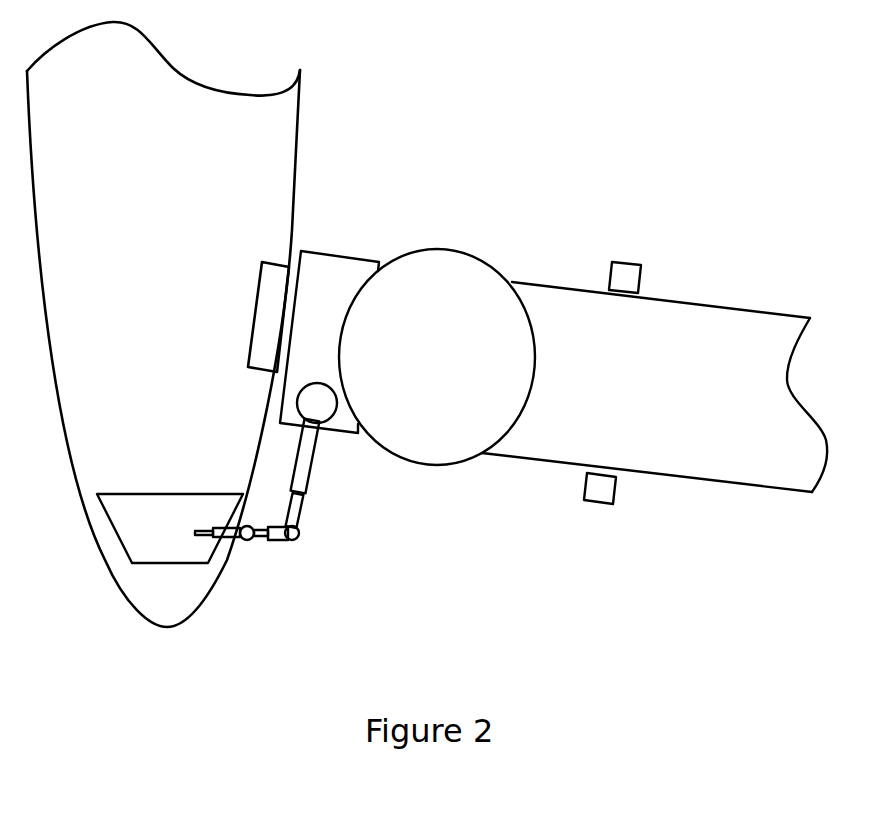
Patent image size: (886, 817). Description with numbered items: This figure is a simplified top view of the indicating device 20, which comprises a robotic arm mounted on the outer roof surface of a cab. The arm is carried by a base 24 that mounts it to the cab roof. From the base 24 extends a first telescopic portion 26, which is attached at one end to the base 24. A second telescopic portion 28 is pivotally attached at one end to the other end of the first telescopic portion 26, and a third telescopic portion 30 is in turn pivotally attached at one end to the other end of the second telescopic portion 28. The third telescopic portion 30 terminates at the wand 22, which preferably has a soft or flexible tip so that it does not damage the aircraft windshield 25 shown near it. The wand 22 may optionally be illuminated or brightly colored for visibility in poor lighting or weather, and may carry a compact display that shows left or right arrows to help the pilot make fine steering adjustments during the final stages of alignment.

The indicating device 20 is at (352, 515).
The wand 22 is at (203, 533).
The base 24 is at (325, 410).
The aircraft windshield 25 is at (137, 537).
The first telescopic portion 26 is at (305, 497).
The second telescopic portion 28 is at (270, 542).
The third telescopic portion 30 is at (227, 538).